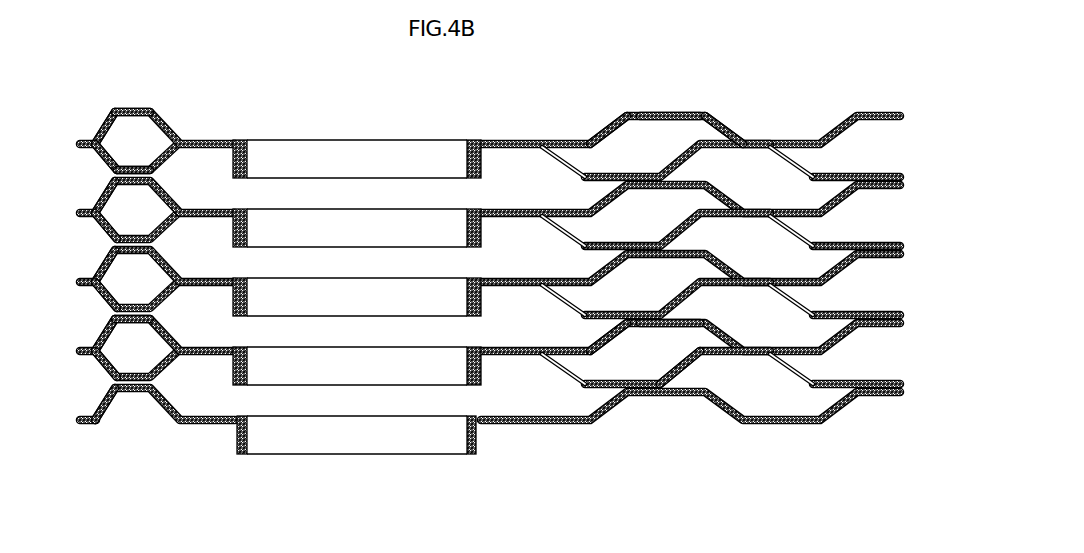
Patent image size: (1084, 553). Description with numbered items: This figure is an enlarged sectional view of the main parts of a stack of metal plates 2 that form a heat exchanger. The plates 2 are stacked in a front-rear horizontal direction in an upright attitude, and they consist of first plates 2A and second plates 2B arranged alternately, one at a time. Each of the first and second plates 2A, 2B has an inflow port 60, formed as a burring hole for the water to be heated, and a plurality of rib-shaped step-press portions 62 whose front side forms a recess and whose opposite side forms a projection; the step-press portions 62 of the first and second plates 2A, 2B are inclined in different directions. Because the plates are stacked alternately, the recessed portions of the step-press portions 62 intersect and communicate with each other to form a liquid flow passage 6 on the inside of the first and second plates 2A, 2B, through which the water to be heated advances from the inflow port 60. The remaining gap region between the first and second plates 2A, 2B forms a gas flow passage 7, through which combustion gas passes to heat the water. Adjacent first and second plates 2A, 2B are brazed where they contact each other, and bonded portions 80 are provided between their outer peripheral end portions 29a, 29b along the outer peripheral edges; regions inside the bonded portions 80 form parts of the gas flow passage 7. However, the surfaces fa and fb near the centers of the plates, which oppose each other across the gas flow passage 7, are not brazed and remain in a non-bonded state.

The plates 2 is at (497, 282).
The first plate 2A is at (163, 125).
The second plate 2B is at (162, 168).
The liquid flow passage 6 is at (767, 242).
The gas flow passage 7 is at (130, 127).
The inflow port 60 is at (370, 218).
The step-press portions 62 is at (800, 234).
The bonded portions 80 is at (81, 143).
The outer peripheral end portion of first plate 29a is at (89, 137).
The outer peripheral end portion of second plate 29b is at (92, 152).
The surface near center of first plate fa is at (667, 120).
The surface near center of second plate fb is at (703, 131).